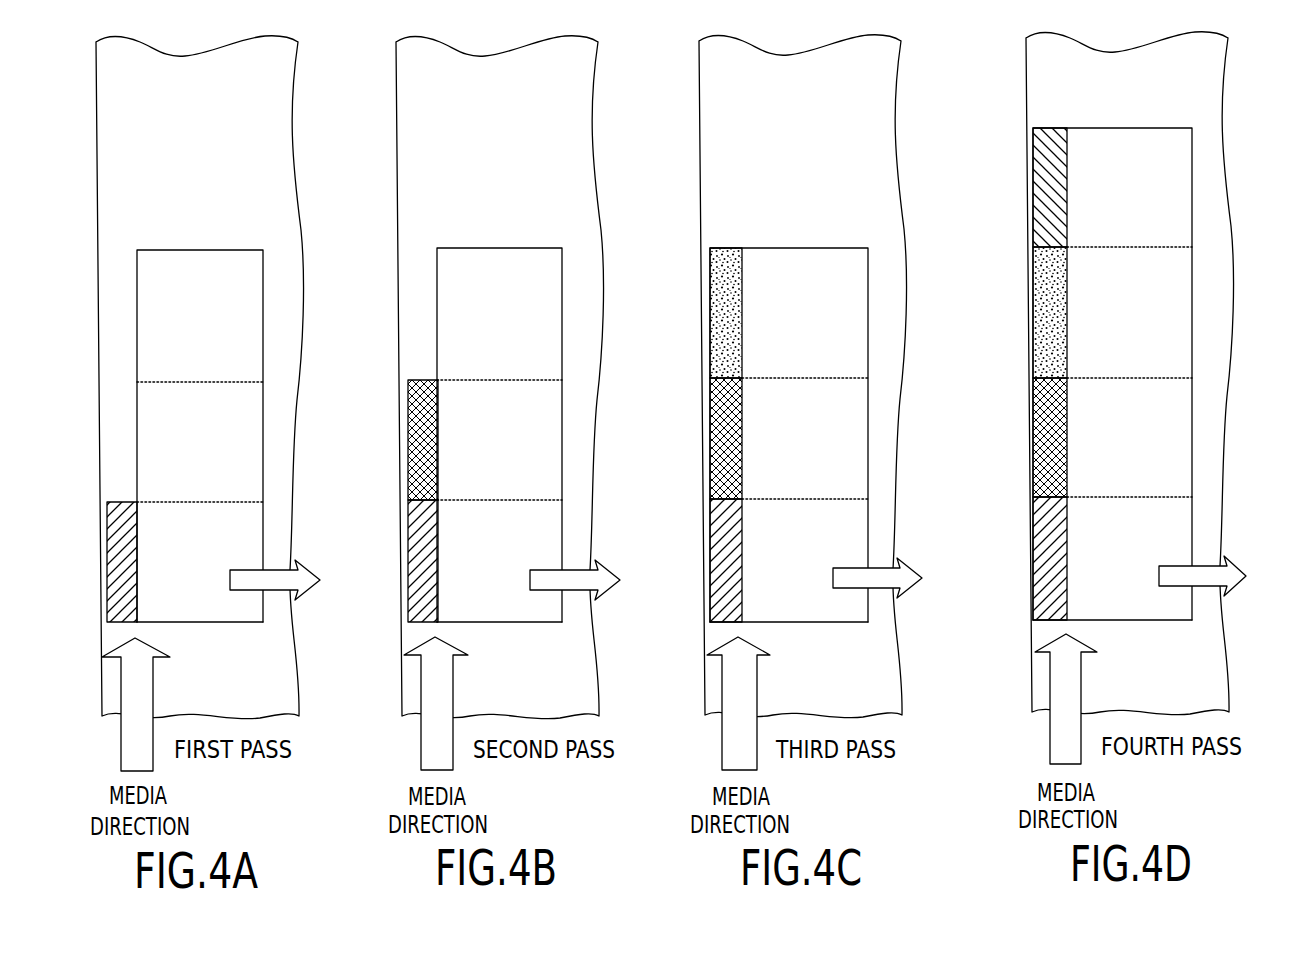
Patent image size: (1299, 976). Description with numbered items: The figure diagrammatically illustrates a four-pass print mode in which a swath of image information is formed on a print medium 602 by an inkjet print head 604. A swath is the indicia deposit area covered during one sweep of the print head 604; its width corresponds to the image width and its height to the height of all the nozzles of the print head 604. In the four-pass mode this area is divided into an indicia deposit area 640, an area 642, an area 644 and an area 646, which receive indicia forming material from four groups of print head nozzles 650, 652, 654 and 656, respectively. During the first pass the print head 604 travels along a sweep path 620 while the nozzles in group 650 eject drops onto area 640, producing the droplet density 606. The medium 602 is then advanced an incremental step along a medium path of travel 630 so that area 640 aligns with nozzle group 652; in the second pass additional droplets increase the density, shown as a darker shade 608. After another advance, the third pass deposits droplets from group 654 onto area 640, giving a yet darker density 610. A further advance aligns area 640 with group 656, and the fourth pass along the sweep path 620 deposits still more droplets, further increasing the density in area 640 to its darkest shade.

In FIG. 4A, the print medium 602 is at (117, 128).
In FIG. 4B, the print medium 602 is at (415, 212).
In FIG. 4C, the print medium 602 is at (720, 165).
In FIG. 4D, the print medium 602 is at (1030, 103).
In FIG. 4A, the inkjet print head 604 is at (231, 249).
In FIG. 4B, the inkjet print head 604 is at (517, 247).
In FIG. 4C, the inkjet print head 604 is at (813, 247).
In FIG. 4D, the inkjet print head 604 is at (1123, 127).
In FIG. 4A, the first pass ink droplet density 606 is at (113, 608).
In FIG. 4B, the second pass ink droplet density 608 is at (408, 440).
In FIG. 4C, the third pass ink droplet density 610 is at (712, 258).
In FIG. 4A, the sweep path 620 is at (321, 576).
In FIG. 4B, the sweep path 620 is at (620, 578).
In FIG. 4C, the sweep path 620 is at (905, 562).
In FIG. 4D, the sweep path 620 is at (1240, 570).
In FIG. 4A, the medium path of travel 630 is at (128, 757).
In FIG. 4B, the medium path of travel 630 is at (428, 760).
In FIG. 4C, the medium path of travel 630 is at (726, 745).
In FIG. 4D, the medium path of travel 630 is at (1056, 742).
In FIG. 4A, the indicia deposit area 640 is at (82, 556).
In FIG. 4B, the indicia deposit area 640 is at (388, 428).
In FIG. 4C, the indicia deposit area 640 is at (681, 289).
In FIG. 4D, the indicia deposit area 640 is at (1028, 204).
In FIG. 4B, the indicia deposit area 642 is at (410, 578).
In FIG. 4C, the indicia deposit area 642 is at (710, 458).
In FIG. 4D, the indicia deposit area 642 is at (1040, 350).
In FIG. 4C, the indicia deposit area 644 is at (712, 572).
In FIG. 4D, the indicia deposit area 644 is at (1042, 478).
In FIG. 4D, the indicia deposit area 646 is at (1042, 592).
In FIG. 4A, the print head nozzle group 650 is at (197, 608).
In FIG. 4B, the print head nozzle group 650 is at (498, 625).
In FIG. 4C, the print head nozzle group 650 is at (848, 613).
In FIG. 4D, the print head nozzle group 650 is at (1150, 611).
In FIG. 4A, the print head nozzle group 652 is at (152, 420).
In FIG. 4B, the print head nozzle group 652 is at (540, 436).
In FIG. 4C, the print head nozzle group 652 is at (860, 437).
In FIG. 4D, the print head nozzle group 652 is at (1183, 456).
In FIG. 4A, the print head nozzle group 654 is at (150, 305).
In FIG. 4B, the print head nozzle group 654 is at (540, 324).
In FIG. 4C, the print head nozzle group 654 is at (860, 365).
In FIG. 4D, the print head nozzle group 654 is at (1178, 370).
In FIG. 4D, the print head nozzle group 656 is at (1172, 202).